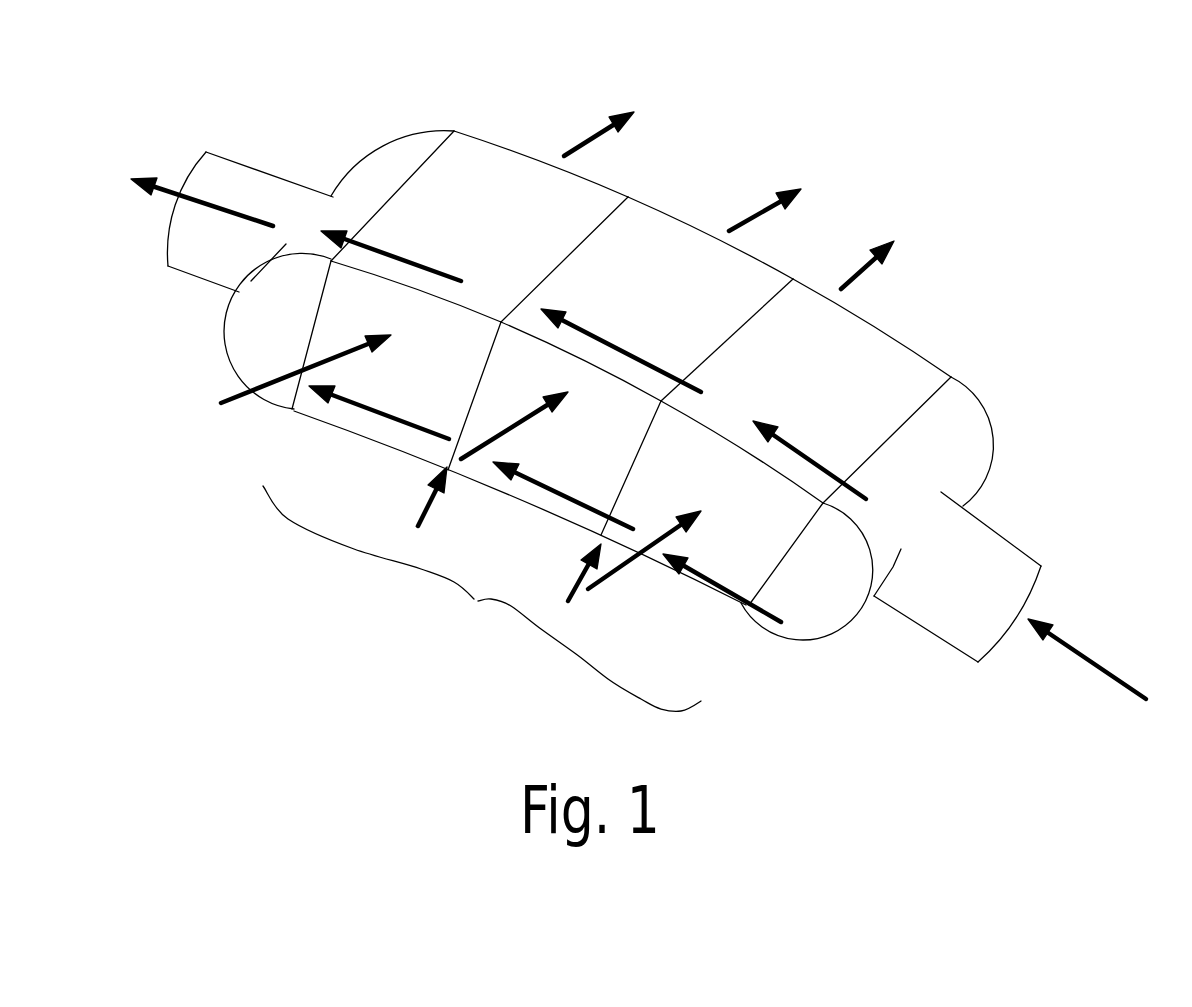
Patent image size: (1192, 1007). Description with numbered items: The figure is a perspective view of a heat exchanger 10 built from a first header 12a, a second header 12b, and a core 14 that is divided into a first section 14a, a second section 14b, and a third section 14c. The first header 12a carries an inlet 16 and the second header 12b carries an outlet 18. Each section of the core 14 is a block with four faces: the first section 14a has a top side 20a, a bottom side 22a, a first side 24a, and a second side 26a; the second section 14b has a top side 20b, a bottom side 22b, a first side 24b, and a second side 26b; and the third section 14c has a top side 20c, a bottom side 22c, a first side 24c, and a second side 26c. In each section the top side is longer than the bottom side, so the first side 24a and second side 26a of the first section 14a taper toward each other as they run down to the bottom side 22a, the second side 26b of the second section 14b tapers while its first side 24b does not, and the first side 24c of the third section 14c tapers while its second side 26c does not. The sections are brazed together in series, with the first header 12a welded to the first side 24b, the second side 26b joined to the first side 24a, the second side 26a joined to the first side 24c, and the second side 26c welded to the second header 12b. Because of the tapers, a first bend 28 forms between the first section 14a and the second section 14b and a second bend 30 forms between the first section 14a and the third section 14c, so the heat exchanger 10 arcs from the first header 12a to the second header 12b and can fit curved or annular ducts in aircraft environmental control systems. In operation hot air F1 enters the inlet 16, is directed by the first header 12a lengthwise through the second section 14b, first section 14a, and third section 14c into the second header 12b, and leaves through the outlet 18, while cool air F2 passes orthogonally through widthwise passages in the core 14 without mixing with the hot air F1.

The heat exchanger 10 is at (866, 143).
The first header 12a is at (989, 384).
The second header 12b is at (396, 123).
The core 14 is at (475, 602).
The first section 14a is at (670, 208).
The second section 14b is at (895, 308).
The third section 14c is at (513, 136).
The inlet 16 is at (973, 543).
The outlet 18 is at (208, 172).
The top side 20a is at (625, 313).
The top side 20b is at (780, 397).
The top side 20c is at (488, 217).
The bottom side 22a is at (498, 500).
The bottom side 22b is at (662, 582).
The bottom side 22c is at (357, 437).
The first side 24a is at (623, 473).
The first side 24b is at (772, 567).
The first side 24c is at (463, 413).
The second side 26a is at (492, 352).
The second side 26b is at (647, 443).
The second side 26c is at (317, 314).
The first bend 28 is at (576, 587).
The second bend 30 is at (422, 510).
The hot air F1 is at (207, 206).
The cool air F2 is at (605, 133).